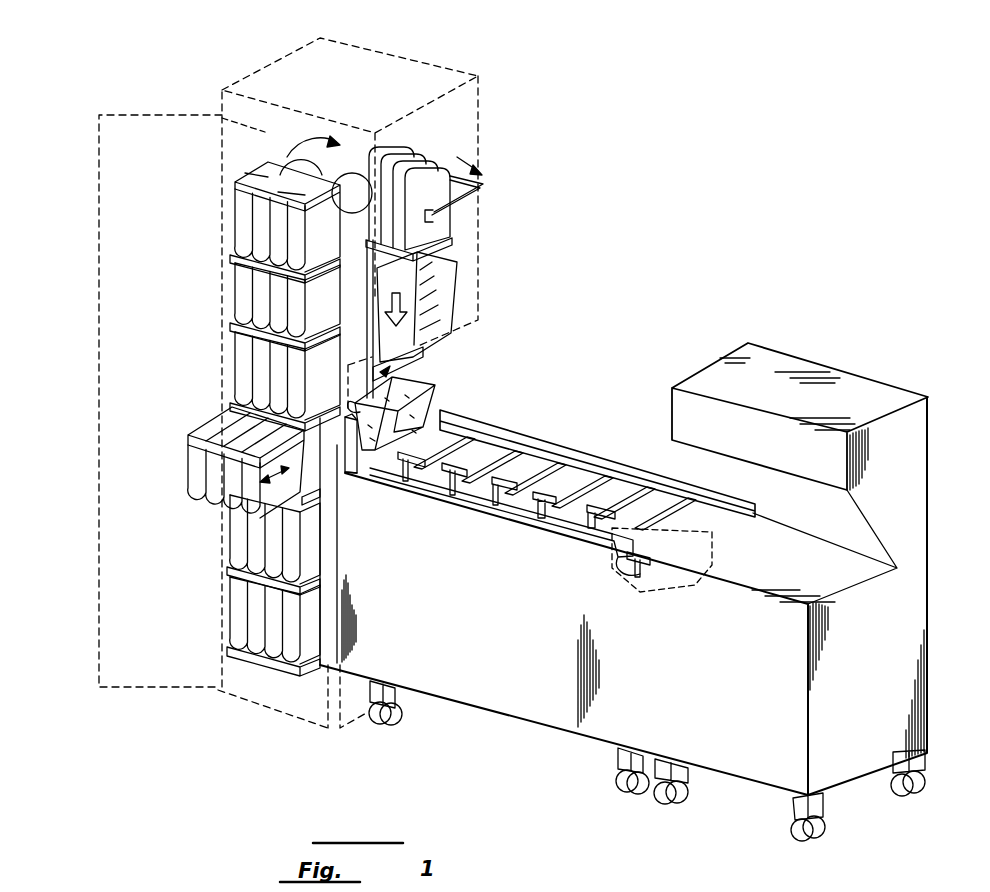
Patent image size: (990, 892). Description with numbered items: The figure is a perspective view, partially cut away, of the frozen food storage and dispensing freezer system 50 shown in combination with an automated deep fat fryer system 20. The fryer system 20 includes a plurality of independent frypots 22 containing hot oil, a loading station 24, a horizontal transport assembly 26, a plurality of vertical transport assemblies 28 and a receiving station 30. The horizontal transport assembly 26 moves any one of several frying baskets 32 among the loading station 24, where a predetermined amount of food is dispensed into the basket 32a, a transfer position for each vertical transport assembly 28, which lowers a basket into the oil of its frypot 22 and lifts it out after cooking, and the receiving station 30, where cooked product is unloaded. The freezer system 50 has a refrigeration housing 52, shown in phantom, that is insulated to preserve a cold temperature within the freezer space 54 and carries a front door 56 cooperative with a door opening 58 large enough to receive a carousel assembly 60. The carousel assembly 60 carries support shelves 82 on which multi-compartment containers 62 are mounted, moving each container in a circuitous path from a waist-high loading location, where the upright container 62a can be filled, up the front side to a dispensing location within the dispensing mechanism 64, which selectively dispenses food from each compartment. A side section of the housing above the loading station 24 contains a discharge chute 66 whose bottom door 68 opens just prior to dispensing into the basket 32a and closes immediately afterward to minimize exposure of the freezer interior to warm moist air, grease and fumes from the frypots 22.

The automated deep fat fryer system 20 is at (473, 732).
The fryer stations or frypots 22 is at (610, 493).
The loading station 24 is at (470, 377).
The horizontal transport assembly 26 is at (333, 447).
The vertical transport assemblies 28 is at (537, 499).
The receiving station 30 is at (856, 566).
The frying baskets 32 is at (712, 548).
The basket 32a is at (440, 407).
The frozen food storage and dispensing freezer system 50 is at (531, 184).
The refrigeration housing 52 is at (483, 88).
The freezer space 54 is at (252, 147).
The front door 56 is at (97, 364).
The door opening 58 is at (210, 114).
The carousel assembly 60 is at (320, 178).
The multi-compartment containers 62 is at (238, 365).
The container 62a is at (192, 475).
The dispensing mechanism 64 is at (480, 190).
The discharge chute 66 is at (437, 296).
The door 68 is at (420, 349).
The support shelves 82 is at (236, 259).